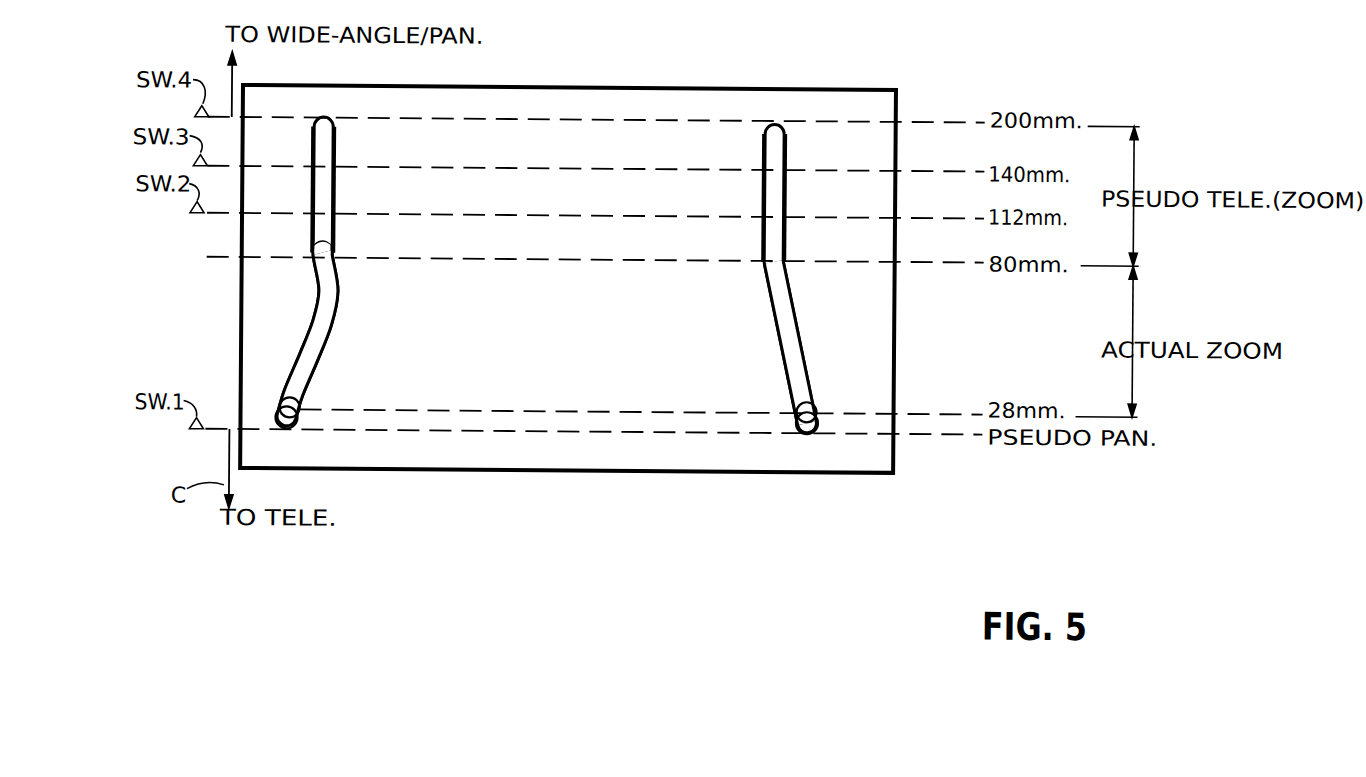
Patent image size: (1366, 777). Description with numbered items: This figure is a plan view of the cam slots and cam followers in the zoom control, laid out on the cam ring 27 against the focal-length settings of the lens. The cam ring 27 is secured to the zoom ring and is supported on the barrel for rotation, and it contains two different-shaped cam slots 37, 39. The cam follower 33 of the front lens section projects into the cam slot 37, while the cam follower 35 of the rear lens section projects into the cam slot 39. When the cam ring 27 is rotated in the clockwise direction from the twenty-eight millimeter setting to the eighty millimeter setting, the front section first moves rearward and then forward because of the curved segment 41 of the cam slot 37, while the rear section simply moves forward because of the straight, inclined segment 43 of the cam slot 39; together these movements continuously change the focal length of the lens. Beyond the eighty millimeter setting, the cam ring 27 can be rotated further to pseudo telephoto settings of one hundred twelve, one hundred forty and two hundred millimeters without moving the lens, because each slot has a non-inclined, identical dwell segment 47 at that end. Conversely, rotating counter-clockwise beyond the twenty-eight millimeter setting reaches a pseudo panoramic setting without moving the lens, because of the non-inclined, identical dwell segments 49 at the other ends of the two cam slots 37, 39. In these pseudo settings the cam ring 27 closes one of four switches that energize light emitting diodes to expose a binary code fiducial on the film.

The cam ring 27 is at (625, 471).
The cam follower 33 is at (286, 398).
The cam follower 35 is at (802, 401).
The cam slot 37 is at (342, 297).
The cam slot 39 is at (765, 309).
The curved segment 41 is at (324, 348).
The straight, inclined segment 43 is at (787, 343).
The dwell segments 47 is at (336, 183).
The dwell segments 49 is at (287, 432).